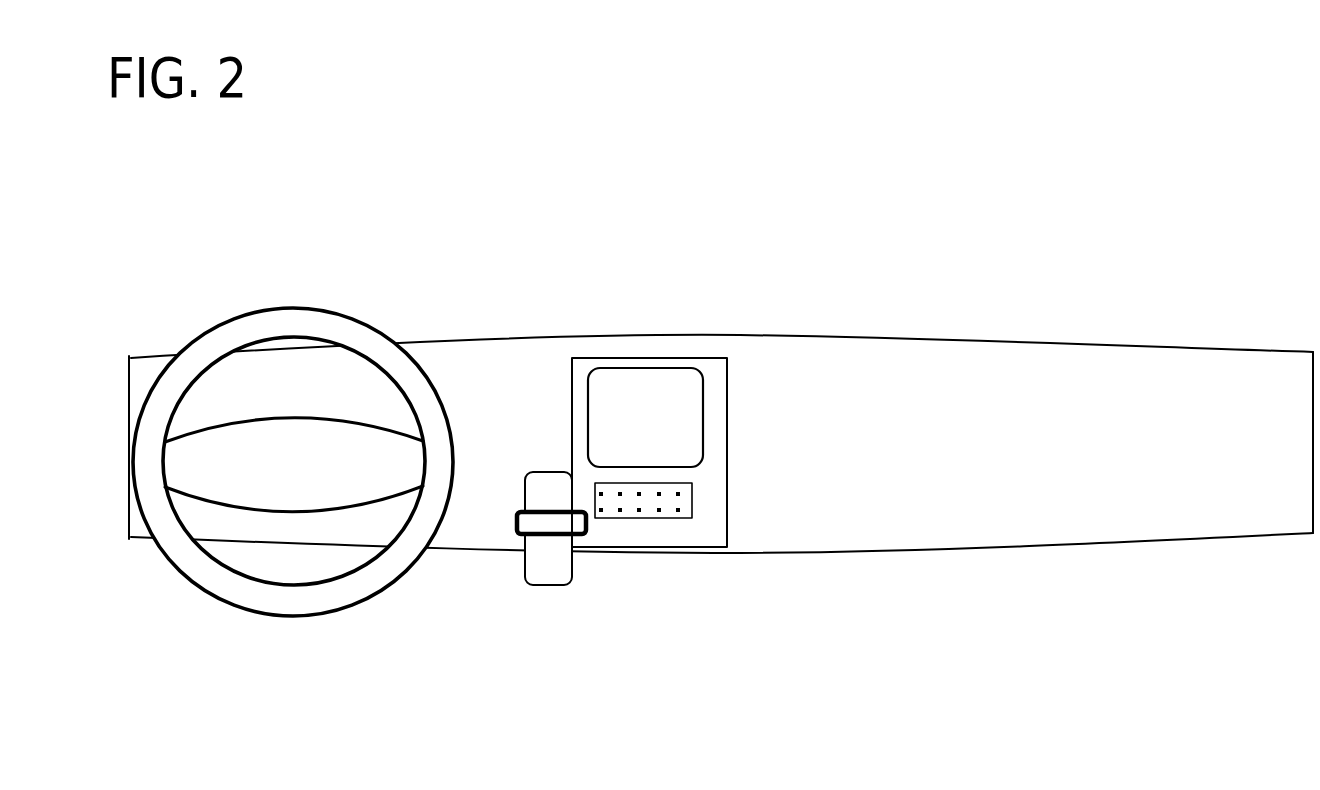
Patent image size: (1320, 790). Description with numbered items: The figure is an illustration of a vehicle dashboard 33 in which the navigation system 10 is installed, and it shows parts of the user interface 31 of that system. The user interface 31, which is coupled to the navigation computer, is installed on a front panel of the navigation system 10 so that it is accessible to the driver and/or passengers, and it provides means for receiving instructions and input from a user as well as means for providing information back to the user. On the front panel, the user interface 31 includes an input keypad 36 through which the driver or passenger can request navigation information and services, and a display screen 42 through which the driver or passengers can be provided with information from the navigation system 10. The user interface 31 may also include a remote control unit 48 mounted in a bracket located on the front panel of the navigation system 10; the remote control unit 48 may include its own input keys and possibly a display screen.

The navigation system 10 is at (774, 352).
The user interface 31 is at (774, 388).
The dashboard 33 is at (1168, 342).
The input keypad 36 is at (733, 549).
The display screen 42 is at (637, 398).
The remote control unit 48 is at (512, 520).